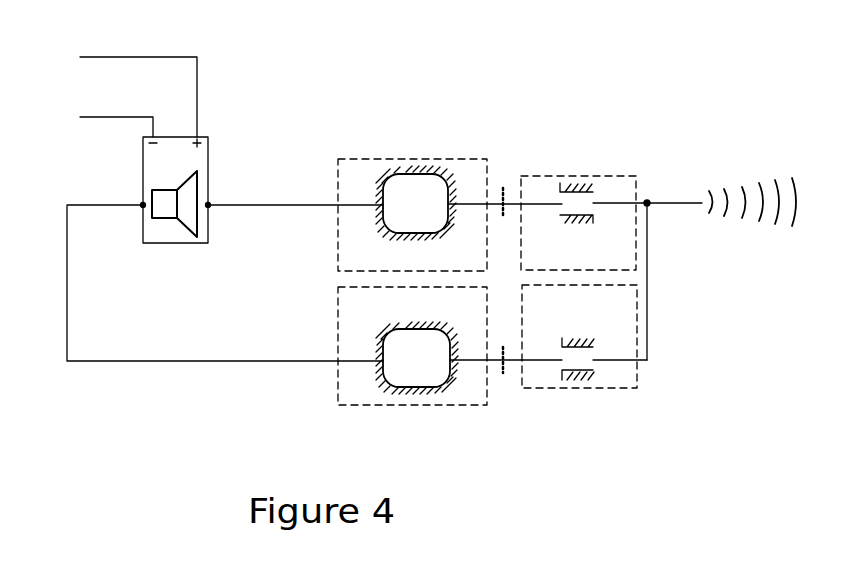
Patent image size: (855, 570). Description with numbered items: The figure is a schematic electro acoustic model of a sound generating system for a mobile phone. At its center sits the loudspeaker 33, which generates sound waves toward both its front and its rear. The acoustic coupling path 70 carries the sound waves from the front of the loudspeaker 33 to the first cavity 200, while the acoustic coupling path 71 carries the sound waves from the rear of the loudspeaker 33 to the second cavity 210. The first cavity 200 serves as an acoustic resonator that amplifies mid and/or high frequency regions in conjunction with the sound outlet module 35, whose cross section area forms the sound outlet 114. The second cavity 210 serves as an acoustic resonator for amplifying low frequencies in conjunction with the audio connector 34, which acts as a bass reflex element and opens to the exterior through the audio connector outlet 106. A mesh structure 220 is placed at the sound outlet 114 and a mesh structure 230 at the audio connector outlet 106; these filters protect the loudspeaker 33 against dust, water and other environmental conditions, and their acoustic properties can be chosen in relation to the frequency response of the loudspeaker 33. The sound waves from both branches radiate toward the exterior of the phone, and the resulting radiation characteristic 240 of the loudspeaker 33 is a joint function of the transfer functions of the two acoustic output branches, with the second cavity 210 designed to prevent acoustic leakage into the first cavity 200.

The loudspeaker 33 is at (208, 150).
The acoustic coupling path 70 is at (248, 205).
The acoustic coupling path 71 is at (65, 271).
The first cavity 200 is at (382, 175).
The second cavity 210 is at (380, 371).
The mesh structure 220 is at (500, 186).
The mesh structure 230 is at (498, 376).
The sound outlet module 35 is at (562, 174).
The audio connector 34 is at (573, 384).
The sound outlet 114 is at (593, 201).
The audio connector outlet 106 is at (597, 365).
The radiation characteristic 240 is at (762, 228).